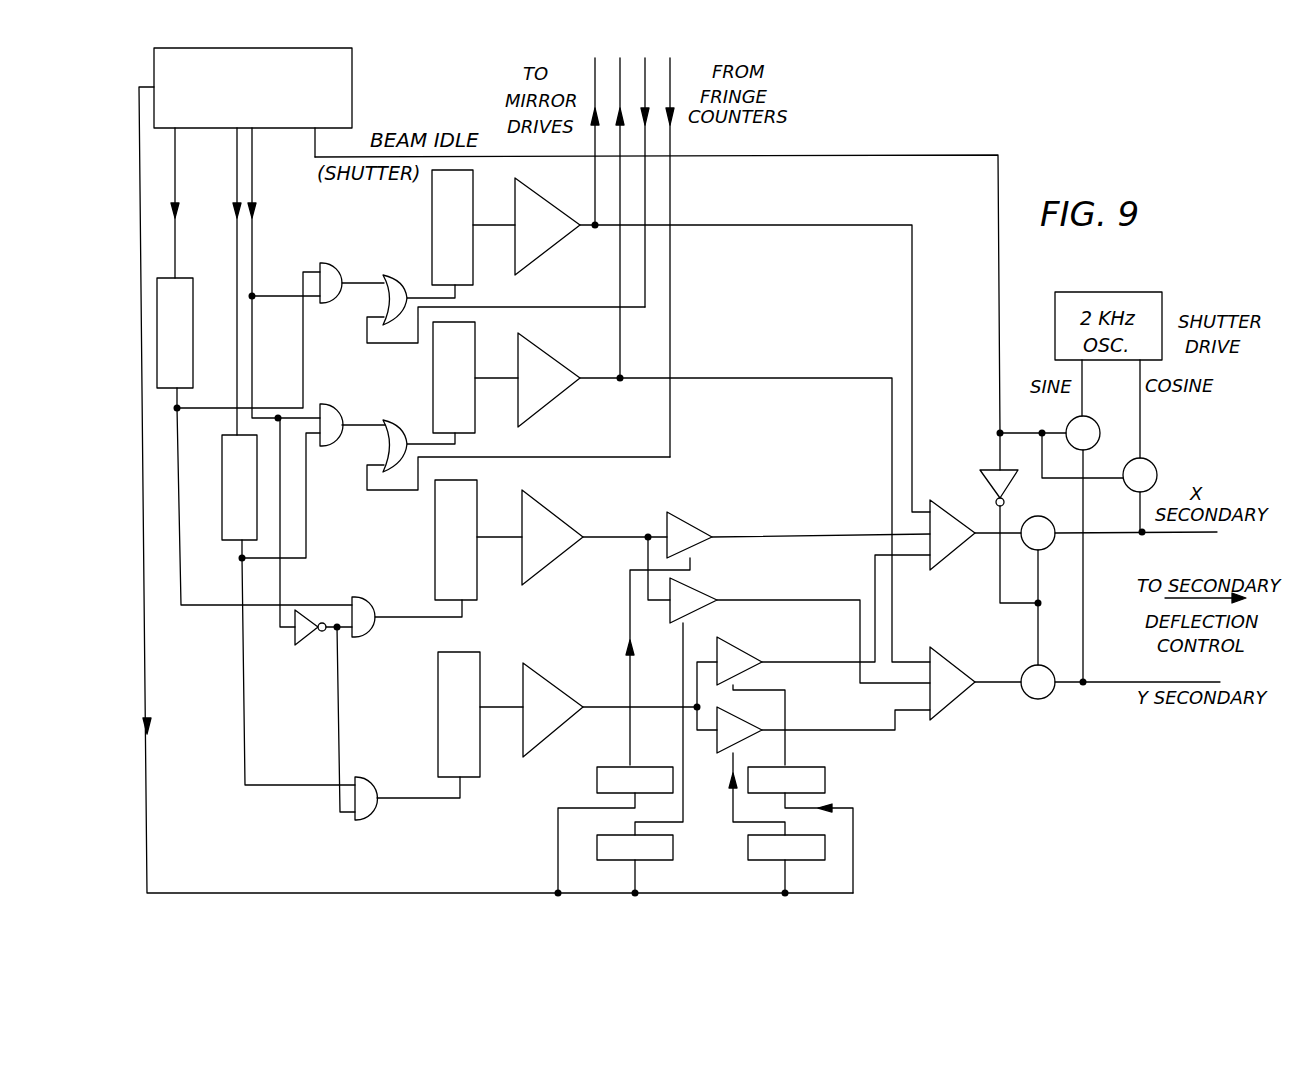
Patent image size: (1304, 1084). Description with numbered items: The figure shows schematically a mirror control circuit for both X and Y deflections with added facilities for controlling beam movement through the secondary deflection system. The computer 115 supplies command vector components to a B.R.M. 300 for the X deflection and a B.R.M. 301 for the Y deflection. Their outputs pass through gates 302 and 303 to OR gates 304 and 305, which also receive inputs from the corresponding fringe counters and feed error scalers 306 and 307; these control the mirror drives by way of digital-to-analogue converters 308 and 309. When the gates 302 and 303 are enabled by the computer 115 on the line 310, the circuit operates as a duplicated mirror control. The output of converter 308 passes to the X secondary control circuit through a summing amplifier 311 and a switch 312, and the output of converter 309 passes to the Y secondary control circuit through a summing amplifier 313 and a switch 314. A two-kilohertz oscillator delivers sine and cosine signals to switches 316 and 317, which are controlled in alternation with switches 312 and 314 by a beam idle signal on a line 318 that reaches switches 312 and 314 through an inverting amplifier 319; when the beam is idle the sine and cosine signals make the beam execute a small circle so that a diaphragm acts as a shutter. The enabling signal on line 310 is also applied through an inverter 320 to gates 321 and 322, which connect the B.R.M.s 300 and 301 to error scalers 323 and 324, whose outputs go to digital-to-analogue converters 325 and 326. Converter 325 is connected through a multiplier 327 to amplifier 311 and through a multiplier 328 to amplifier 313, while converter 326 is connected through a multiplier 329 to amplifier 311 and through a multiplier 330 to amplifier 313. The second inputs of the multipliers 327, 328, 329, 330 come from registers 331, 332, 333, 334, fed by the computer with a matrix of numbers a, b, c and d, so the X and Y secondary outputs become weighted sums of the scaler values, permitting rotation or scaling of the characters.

The computer 115 is at (352, 97).
The B.R.M. for the X deflection 300 is at (188, 276).
The B.R.M. for the Y deflection 301 is at (222, 443).
The gate 302 is at (326, 262).
The gate 303 is at (338, 446).
The OR gate 304 is at (405, 263).
The OR gate 305 is at (393, 419).
The error scaler 306 is at (432, 206).
The error scaler 307 is at (470, 418).
The digital-to-analogue converter 308 is at (545, 207).
The digital-to-analogue converter 309 is at (548, 363).
The line 310 is at (254, 197).
The summing amplifier 311 is at (945, 498).
The switch 312 is at (1046, 544).
The summing amplifier 313 is at (951, 652).
The switch 314 is at (1026, 670).
The switch 316 is at (1091, 423).
The switch 317 is at (1128, 488).
The line 318 is at (871, 153).
The inverting amplifier 319 is at (995, 478).
The inverter 320 is at (306, 643).
The gate 321 is at (369, 633).
The gate 322 is at (373, 784).
The error scaler 323 is at (434, 533).
The error scaler 324 is at (437, 686).
The digital-to-analogue converter 325 is at (555, 559).
The digital-to-analogue converter 326 is at (560, 684).
The multiplier 327 is at (699, 525).
The multiplier 328 is at (698, 592).
The multiplier 329 is at (733, 652).
The multiplier 330 is at (727, 748).
The register 331 is at (617, 767).
The register 332 is at (624, 858).
The register 333 is at (825, 775).
The register 334 is at (822, 858).